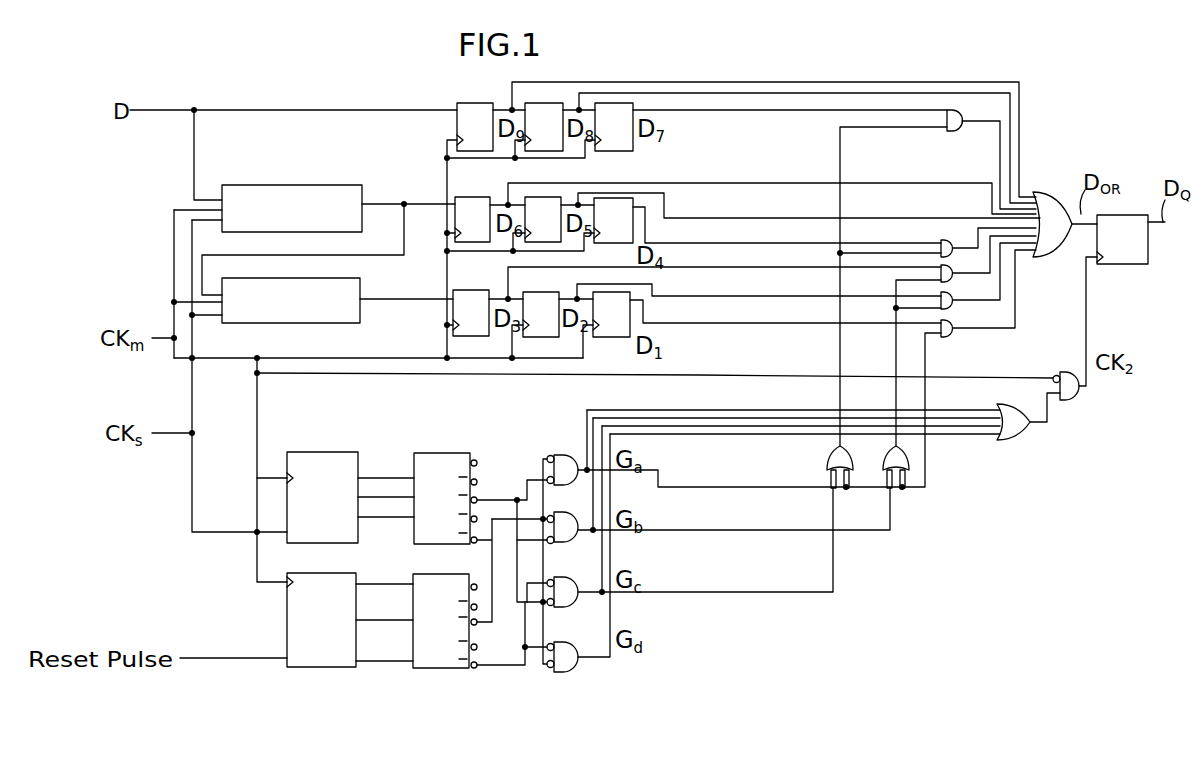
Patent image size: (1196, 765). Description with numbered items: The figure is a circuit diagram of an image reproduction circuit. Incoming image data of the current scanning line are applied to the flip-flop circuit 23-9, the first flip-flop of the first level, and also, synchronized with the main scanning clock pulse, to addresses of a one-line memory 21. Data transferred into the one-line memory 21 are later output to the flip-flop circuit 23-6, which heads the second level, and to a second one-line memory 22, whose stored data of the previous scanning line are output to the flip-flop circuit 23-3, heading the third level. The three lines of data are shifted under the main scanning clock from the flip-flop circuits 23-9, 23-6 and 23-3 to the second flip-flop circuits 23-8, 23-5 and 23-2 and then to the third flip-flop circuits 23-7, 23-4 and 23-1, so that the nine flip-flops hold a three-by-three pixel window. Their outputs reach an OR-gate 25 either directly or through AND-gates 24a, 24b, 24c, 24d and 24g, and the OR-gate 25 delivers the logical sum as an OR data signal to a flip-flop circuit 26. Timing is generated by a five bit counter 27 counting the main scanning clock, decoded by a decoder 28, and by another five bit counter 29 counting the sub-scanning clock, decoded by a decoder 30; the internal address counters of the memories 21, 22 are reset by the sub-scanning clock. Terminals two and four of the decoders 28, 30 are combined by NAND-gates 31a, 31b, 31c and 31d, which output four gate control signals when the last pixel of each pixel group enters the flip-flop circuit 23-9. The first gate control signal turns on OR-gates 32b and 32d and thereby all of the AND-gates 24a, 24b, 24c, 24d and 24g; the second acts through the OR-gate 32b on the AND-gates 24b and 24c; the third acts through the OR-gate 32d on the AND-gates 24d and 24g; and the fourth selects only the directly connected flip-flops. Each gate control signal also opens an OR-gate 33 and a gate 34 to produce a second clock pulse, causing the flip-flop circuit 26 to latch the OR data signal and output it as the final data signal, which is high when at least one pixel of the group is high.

The one-line memory 21 is at (333, 185).
The one-line memory 22 is at (360, 279).
The flip-flop circuit 23-1 is at (611, 314).
The flip-flop circuit 23-2 is at (541, 314).
The flip-flop circuit 23-3 is at (471, 313).
The flip-flop circuit 23-4 is at (613, 220).
The flip-flop circuit 23-5 is at (543, 219).
The flip-flop circuit 23-6 is at (472, 219).
The flip-flop circuit 23-7 is at (614, 127).
The flip-flop circuit 23-8 is at (544, 127).
The flip-flop circuit 23-9 is at (475, 127).
The AND-gate 24a is at (950, 338).
The AND-gate 24b is at (950, 310).
The AND-gate 24c is at (950, 283).
The AND-gate 24d is at (950, 258).
The AND-gate 24g is at (960, 133).
The OR-gate 25 is at (1047, 190).
The flip-flop circuit 26 is at (1148, 264).
The five bit counter 27 is at (335, 452).
The decoder 28 is at (447, 453).
The five bit counter 29 is at (325, 667).
The decoder 30 is at (440, 668).
The NAND-gate 31a is at (562, 455).
The NAND-gate 31b is at (572, 542).
The NAND-gate 31c is at (574, 607).
The NAND-gate 31d is at (574, 672).
The OR-gate 32b is at (909, 450).
The OR-gate 32d is at (827, 450).
The OR-gate 33 is at (1020, 440).
The gate 34 is at (1073, 400).